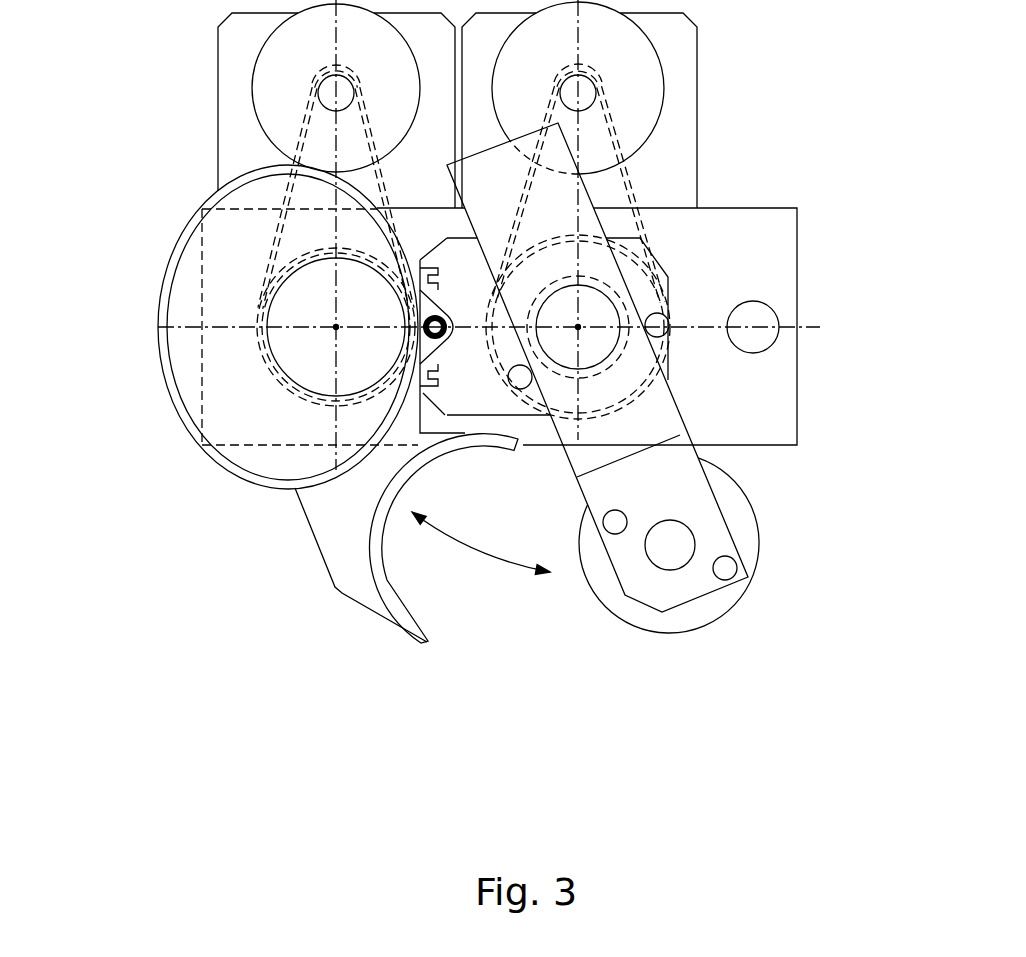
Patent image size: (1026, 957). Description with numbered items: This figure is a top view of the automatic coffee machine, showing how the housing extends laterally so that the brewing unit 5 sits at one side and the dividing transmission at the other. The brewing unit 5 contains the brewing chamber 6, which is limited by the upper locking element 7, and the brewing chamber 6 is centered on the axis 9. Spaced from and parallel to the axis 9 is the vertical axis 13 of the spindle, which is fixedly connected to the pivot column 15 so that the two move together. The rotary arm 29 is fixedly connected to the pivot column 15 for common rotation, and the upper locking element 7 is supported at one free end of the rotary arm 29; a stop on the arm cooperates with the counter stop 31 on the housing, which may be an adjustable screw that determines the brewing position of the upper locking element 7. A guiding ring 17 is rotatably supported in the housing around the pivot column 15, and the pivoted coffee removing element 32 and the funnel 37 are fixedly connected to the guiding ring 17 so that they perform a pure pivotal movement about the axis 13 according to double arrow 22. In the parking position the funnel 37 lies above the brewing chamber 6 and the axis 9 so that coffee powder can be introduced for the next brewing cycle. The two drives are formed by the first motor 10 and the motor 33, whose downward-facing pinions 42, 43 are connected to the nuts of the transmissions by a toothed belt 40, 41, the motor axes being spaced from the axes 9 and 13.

The brewing unit 5 is at (262, 400).
The brewing chamber 6 is at (300, 349).
The upper locking element 7 is at (683, 620).
The axis 9 is at (336, 327).
The first motor 10 is at (636, 63).
The vertical axis 13 is at (578, 327).
The pivot column 15 is at (594, 347).
The guiding ring 17 is at (648, 401).
The double arrow 22 is at (477, 550).
The rotary arm 29 is at (695, 515).
The counter stop 31 is at (765, 316).
The coffee removing element 32 is at (380, 585).
The motor 33 is at (286, 57).
The funnel 37 is at (188, 280).
The toothed belt 40 is at (627, 190).
The toothed belt 41 is at (300, 138).
The pinion 42 is at (329, 95).
The pinion 43 is at (589, 95).